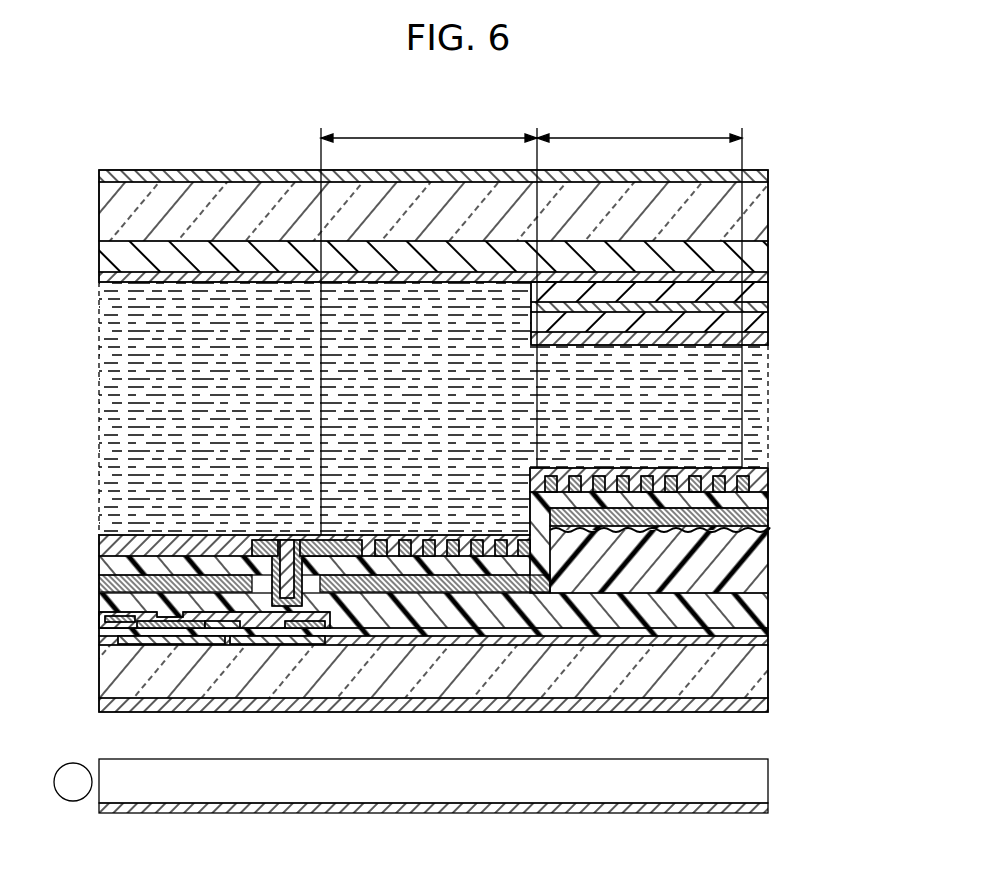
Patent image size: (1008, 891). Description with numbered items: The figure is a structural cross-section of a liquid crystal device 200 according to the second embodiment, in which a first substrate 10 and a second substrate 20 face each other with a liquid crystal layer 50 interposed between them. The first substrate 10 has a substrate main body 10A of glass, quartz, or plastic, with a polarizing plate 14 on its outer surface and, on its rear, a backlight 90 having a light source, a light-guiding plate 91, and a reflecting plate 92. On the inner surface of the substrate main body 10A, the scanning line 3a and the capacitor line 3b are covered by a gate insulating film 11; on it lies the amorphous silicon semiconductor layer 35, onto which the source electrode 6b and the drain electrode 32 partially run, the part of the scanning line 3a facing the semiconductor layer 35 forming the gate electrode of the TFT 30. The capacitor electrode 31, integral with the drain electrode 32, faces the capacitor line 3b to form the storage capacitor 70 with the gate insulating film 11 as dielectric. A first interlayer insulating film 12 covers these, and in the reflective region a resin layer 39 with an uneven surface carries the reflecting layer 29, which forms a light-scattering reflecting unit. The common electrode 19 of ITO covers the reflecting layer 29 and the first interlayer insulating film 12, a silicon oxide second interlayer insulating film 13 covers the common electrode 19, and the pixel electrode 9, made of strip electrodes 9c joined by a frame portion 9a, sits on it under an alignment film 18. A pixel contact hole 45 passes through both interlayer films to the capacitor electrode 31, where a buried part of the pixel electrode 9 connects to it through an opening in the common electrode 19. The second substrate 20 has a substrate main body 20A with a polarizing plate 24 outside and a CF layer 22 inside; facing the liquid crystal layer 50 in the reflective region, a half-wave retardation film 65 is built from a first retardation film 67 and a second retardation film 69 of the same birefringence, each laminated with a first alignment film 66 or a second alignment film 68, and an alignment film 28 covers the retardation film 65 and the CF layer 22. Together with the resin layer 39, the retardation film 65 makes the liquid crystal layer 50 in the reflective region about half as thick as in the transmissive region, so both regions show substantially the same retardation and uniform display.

The liquid crystal device 200 is at (796, 126).
The polarizing plate 24 is at (768, 176).
The substrate main body 20A is at (768, 200).
The CF layer 22 is at (768, 252).
The second substrate 20 is at (442, 213).
The first alignment film 66 is at (768, 277).
The first retardation film 67 is at (768, 292).
The second alignment film 68 is at (768, 307).
The second retardation film 69 is at (697, 328).
The retardation film 65 is at (505, 286).
The alignment film 28 is at (768, 340).
The liquid crystal layer 50 is at (768, 410).
The alignment film 18 is at (768, 483).
The strip electrodes 9c is at (630, 476).
The second interlayer insulating film 13 is at (760, 512).
The reflecting layer 29 is at (655, 510).
The resin layer 39 is at (760, 568).
The first interlayer insulating film 12 is at (760, 620).
The gate insulating film 11 is at (760, 637).
The substrate main body 10A is at (760, 672).
The polarizing plate 14 is at (760, 705).
The first substrate 10 is at (440, 582).
The common electrode 19 is at (215, 578).
The frame portion 9a is at (262, 545).
The pixel contact hole 45 is at (292, 580).
The pixel electrode 9 is at (438, 532).
The storage capacitor 70 is at (332, 605).
The TFT 30 is at (208, 606).
The semiconductor layer 35 is at (168, 645).
The scanning line 3a is at (213, 628).
The drain electrode 32 is at (240, 628).
The capacitor line 3b is at (297, 630).
The capacitor electrode 31 is at (313, 645).
The source electrode 6b is at (127, 618).
The light-guiding plate 91 is at (768, 765).
The reflecting plate 92 is at (768, 808).
The backlight 90 is at (483, 788).